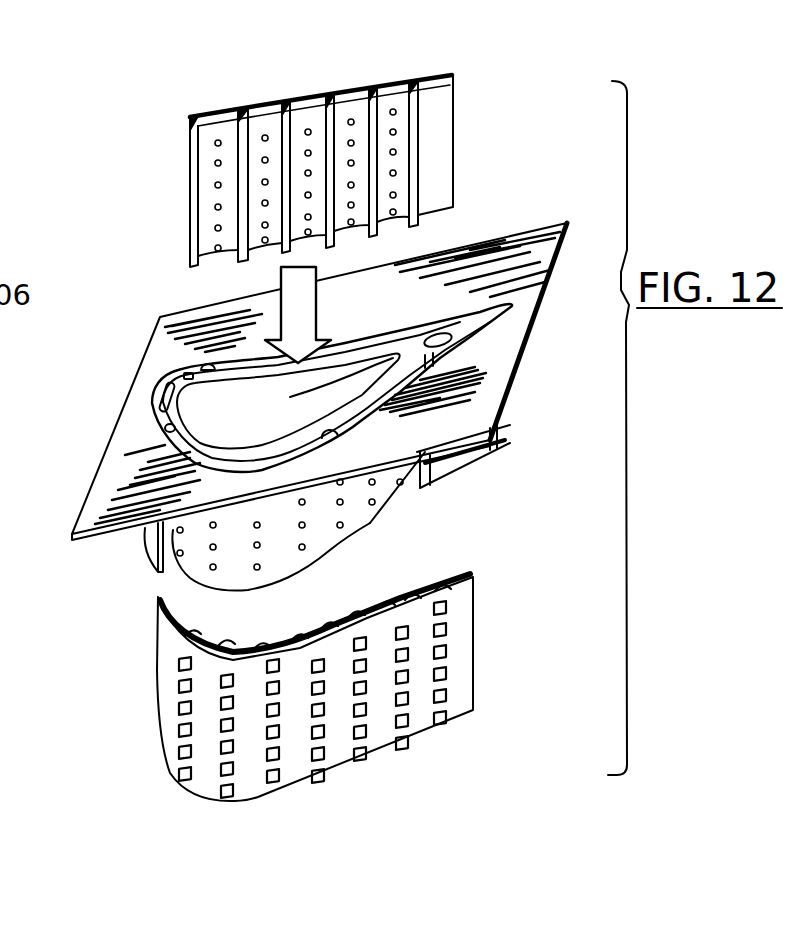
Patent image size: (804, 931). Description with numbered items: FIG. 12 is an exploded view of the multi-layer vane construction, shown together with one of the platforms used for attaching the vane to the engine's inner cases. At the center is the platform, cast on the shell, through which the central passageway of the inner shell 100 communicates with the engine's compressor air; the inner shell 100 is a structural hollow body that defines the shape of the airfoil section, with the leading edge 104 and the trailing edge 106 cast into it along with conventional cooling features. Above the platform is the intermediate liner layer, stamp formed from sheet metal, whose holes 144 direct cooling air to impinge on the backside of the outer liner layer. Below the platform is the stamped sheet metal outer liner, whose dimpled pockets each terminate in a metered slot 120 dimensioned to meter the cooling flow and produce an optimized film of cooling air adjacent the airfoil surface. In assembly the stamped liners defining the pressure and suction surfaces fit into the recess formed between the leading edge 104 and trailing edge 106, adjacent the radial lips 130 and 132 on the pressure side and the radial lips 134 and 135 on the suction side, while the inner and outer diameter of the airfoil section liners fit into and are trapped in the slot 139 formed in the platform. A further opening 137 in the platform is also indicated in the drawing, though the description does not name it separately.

The inner shell 100 is at (322, 558).
The leading edge 104 is at (145, 560).
The trailing edge 106 is at (502, 414).
The slot 120 is at (445, 612).
The radial lip 130 is at (204, 368).
The radial lip 132 is at (458, 318).
The radial lip 134 is at (166, 433).
The radial lip 135 is at (452, 342).
The hole 137 is at (337, 432).
The slot 139 is at (350, 368).
The holes 144 is at (396, 105).